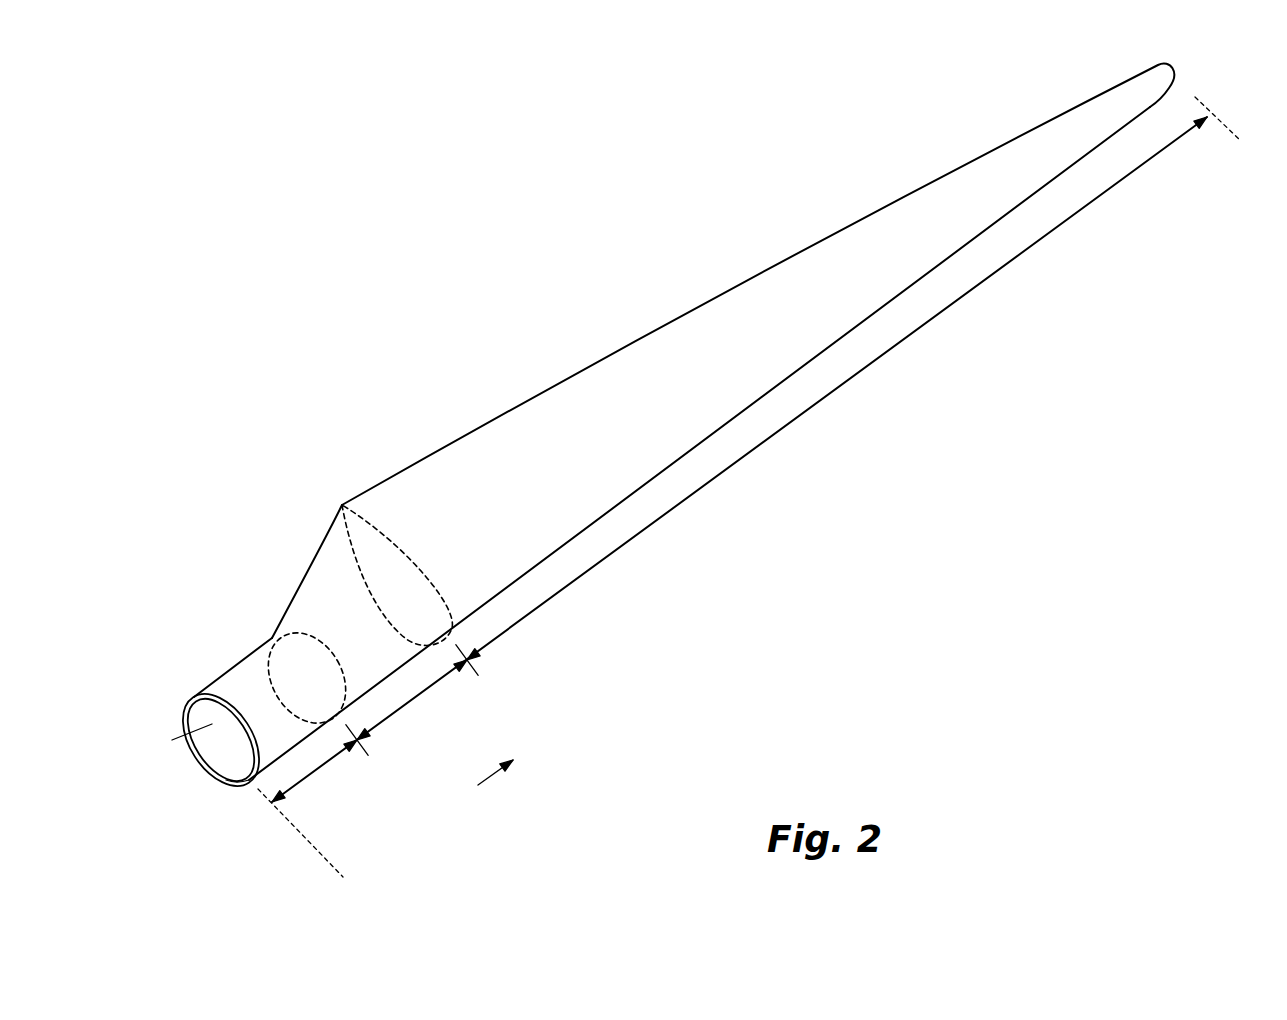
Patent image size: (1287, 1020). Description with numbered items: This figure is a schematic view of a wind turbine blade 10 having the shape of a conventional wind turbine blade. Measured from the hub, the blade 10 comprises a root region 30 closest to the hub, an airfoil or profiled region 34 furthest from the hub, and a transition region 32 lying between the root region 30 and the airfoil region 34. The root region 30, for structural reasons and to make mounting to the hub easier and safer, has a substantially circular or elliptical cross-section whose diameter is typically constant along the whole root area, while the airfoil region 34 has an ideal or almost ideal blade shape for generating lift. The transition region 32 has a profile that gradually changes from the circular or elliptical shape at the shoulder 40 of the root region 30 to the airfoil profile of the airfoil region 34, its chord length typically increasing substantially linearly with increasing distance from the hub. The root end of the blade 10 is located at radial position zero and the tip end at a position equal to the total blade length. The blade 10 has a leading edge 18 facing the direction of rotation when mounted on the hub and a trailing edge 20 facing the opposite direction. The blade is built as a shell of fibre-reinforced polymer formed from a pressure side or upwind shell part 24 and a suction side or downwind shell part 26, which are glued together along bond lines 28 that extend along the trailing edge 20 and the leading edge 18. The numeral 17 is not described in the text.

The wind turbine blade 10 is at (704, 472).
The root end opening 17 is at (172, 740).
The leading edge 18 is at (877, 317).
The trailing edge 20 is at (742, 292).
The pressure side shell part 24 is at (214, 689).
The suction side shell part 26 is at (226, 781).
The bond lines 28 is at (208, 695).
The root region 30 is at (318, 768).
The transition region 32 is at (417, 697).
The airfoil region 34 is at (767, 443).
The shoulder 40 is at (340, 503).